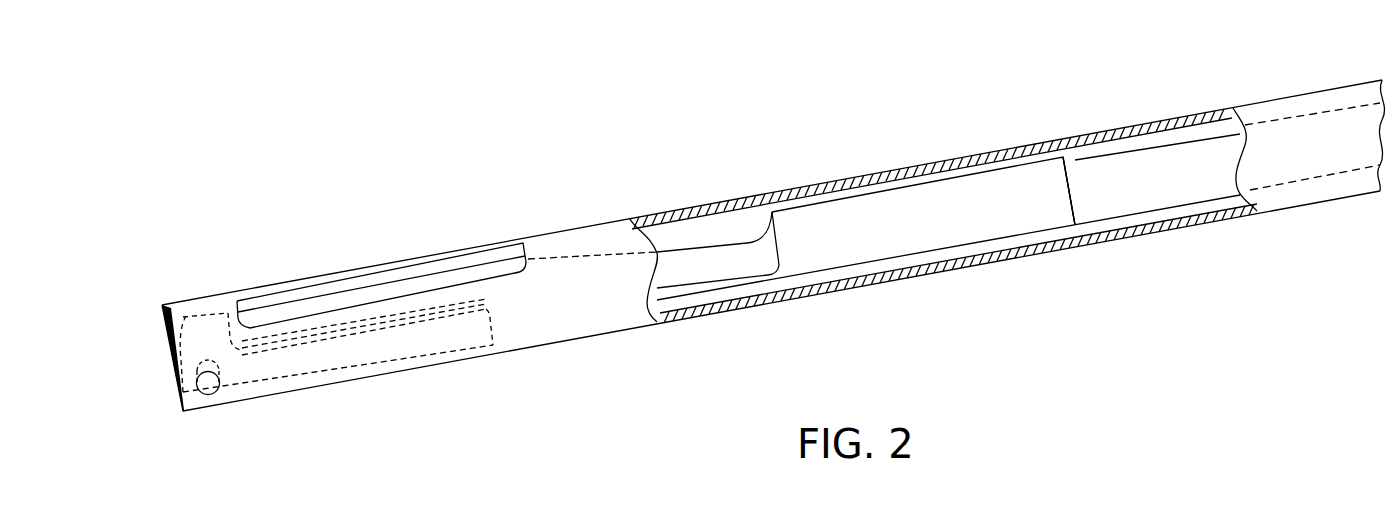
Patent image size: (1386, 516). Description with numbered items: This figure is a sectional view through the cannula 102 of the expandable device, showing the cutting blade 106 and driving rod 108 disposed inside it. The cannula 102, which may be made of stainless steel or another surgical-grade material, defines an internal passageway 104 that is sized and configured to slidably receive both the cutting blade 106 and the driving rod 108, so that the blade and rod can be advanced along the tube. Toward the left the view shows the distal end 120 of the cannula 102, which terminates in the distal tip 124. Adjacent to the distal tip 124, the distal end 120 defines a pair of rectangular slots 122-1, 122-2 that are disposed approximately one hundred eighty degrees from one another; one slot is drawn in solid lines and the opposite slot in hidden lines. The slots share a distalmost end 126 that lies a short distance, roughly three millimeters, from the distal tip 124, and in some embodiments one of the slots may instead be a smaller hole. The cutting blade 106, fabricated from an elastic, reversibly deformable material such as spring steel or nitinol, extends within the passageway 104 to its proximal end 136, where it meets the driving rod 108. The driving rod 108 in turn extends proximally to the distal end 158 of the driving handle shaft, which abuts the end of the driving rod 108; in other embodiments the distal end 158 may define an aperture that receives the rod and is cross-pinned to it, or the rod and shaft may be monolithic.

The distal end 120 is at (160, 240).
The cannula 102 is at (1152, 125).
The internal passageway 104 is at (1155, 232).
The cutting blade 106 is at (880, 232).
The driving rod 108 is at (1207, 163).
The rectangular slot 122-1 is at (452, 250).
The rectangular slot 122-2 is at (337, 372).
The distal tip 124 is at (177, 400).
The distalmost end 126 is at (238, 305).
The proximal end 136 is at (1058, 207).
The distal end 158 is at (1080, 160).